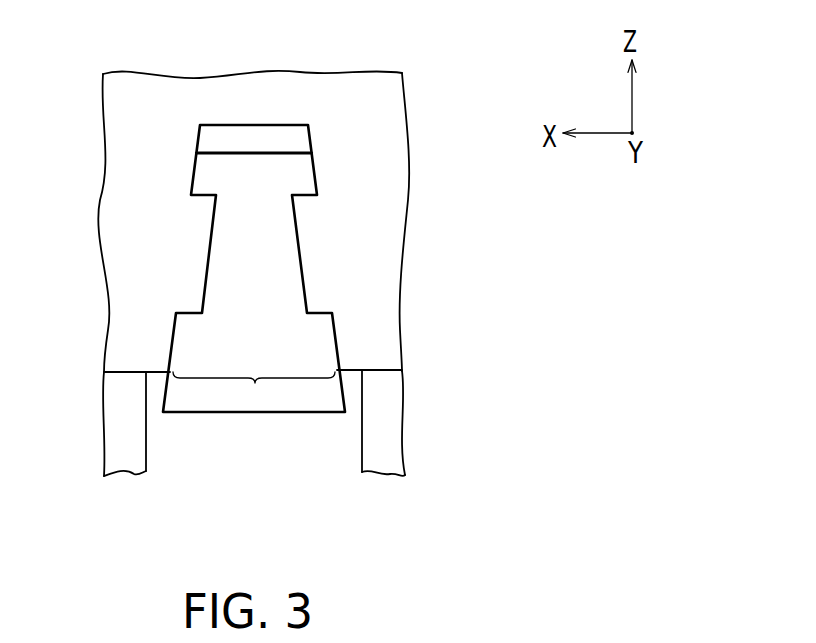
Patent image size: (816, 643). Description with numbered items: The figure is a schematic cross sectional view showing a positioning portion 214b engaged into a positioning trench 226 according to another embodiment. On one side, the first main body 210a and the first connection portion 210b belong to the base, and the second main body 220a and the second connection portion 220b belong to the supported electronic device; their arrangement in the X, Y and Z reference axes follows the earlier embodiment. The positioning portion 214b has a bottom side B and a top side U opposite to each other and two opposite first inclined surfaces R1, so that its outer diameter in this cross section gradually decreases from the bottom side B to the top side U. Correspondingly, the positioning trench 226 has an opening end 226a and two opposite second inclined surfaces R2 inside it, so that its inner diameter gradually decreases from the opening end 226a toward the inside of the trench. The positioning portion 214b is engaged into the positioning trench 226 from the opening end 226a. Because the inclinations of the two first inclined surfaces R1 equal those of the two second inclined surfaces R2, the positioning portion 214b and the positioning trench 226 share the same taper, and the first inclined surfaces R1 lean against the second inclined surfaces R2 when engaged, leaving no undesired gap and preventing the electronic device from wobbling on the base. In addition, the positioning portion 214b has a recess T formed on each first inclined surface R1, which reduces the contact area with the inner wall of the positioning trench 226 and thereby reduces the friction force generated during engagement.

The second main body 220a is at (381, 104).
The second connection portion 220b is at (365, 158).
The positioning trench 226 is at (320, 222).
The positioning portion 214b is at (270, 252).
The opening end 226a is at (255, 383).
The first main body 210a is at (385, 423).
The first connection portion 210b is at (185, 462).
The second inclined surfaces R2 is at (213, 137).
The top side U is at (255, 152).
The first inclined surfaces R1 is at (193, 183).
The recess T is at (321, 298).
The bottom side B is at (307, 417).